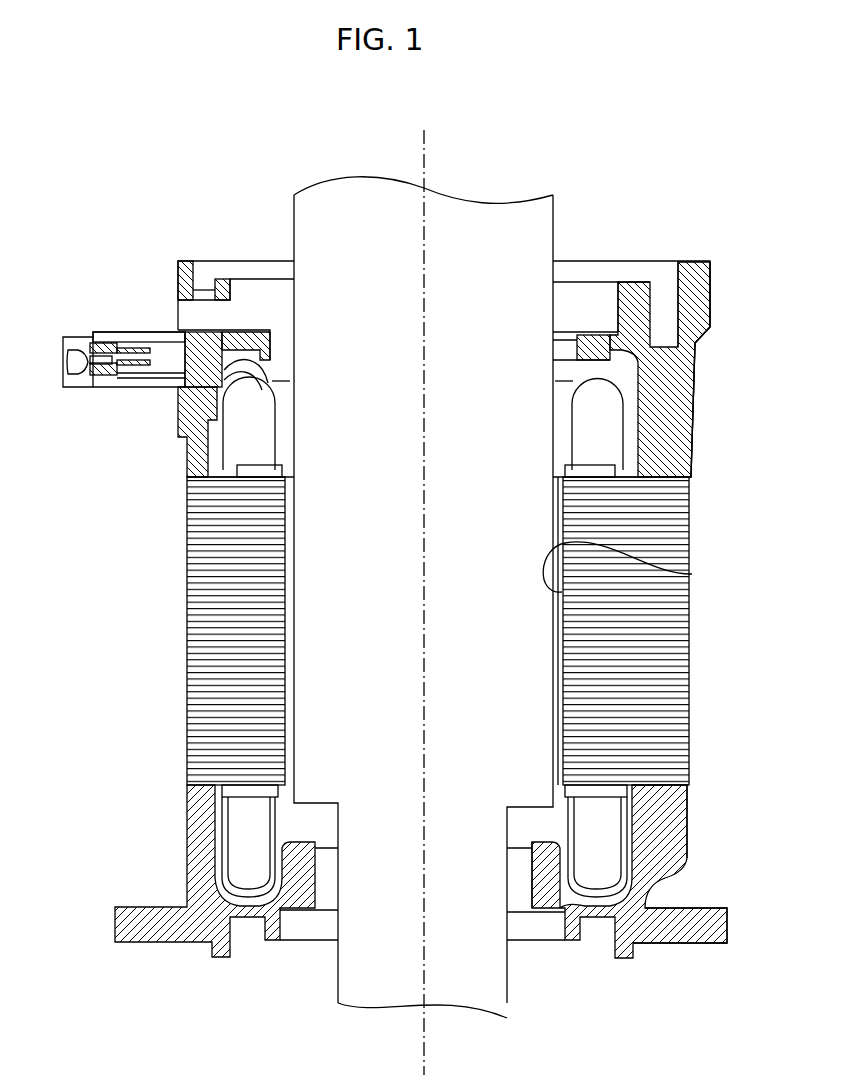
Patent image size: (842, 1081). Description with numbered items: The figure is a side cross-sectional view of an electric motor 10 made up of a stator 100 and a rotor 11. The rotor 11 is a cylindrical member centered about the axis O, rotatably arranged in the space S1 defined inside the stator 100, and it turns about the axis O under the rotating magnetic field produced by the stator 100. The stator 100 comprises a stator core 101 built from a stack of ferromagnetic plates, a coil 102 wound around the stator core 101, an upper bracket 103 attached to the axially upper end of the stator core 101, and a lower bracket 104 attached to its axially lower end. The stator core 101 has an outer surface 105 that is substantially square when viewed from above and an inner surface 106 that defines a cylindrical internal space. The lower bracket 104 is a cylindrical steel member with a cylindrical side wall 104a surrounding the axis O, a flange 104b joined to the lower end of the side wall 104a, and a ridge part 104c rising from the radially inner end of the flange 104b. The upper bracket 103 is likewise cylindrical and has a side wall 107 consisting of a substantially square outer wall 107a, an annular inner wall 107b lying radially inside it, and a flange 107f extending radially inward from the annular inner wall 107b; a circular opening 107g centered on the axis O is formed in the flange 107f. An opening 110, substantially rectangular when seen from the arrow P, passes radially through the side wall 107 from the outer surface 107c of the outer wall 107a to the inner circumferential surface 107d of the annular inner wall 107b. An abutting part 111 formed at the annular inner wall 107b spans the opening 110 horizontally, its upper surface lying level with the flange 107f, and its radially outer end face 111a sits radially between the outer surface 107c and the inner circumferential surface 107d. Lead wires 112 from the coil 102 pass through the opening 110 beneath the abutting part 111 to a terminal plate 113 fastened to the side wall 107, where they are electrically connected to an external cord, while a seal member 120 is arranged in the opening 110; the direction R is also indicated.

The electric motor 10 is at (250, 104).
The stator 100 is at (199, 196).
The rotor 11 is at (292, 228).
The axis O is at (424, 148).
The side wall 107 is at (176, 400).
The outer wall 107a is at (680, 284).
The annular inner wall 107b is at (632, 297).
The outer surface 107c is at (184, 293).
The inner circumferential surface 107d is at (233, 328).
The flange 107f is at (593, 343).
The circular opening 107g is at (575, 347).
The opening 110 is at (181, 308).
The abutting part 111 is at (200, 332).
The radially outer end face 111a is at (182, 334).
The lead wires 112 is at (266, 328).
The terminal plate 113 is at (100, 328).
The seal member 120 is at (177, 345).
The arrow P is at (45, 362).
The direction R is at (10, 358).
The space S1 is at (423, 371).
The stator core 101 is at (696, 668).
The coil 102 is at (240, 436).
The upper bracket 103 is at (699, 396).
The lower bracket 104 is at (670, 960).
The cylindrical side wall 104a is at (663, 823).
The flange 104b is at (713, 935).
The ridge part 104c is at (542, 905).
The outer surface 105 is at (690, 523).
The inner surface 106 is at (692, 574).